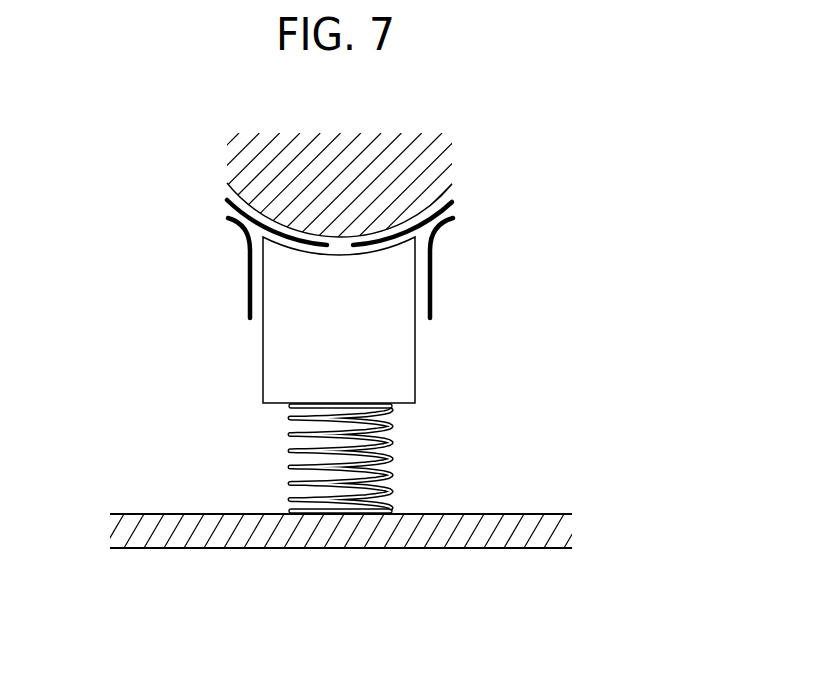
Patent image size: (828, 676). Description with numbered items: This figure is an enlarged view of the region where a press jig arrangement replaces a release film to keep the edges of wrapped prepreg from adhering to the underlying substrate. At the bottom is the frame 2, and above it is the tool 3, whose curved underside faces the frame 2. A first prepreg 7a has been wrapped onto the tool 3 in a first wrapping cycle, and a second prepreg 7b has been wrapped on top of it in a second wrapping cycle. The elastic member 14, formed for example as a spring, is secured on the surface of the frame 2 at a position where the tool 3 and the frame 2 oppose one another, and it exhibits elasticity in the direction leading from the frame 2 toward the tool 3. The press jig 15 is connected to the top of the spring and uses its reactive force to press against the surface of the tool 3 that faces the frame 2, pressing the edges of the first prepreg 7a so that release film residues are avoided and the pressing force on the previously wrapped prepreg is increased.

The frame 2 is at (504, 548).
The tool 3 is at (443, 155).
The first prepreg 7a is at (236, 214).
The second prepreg 7b is at (250, 297).
The elastic member 14 is at (388, 458).
The press jig 15 is at (398, 366).